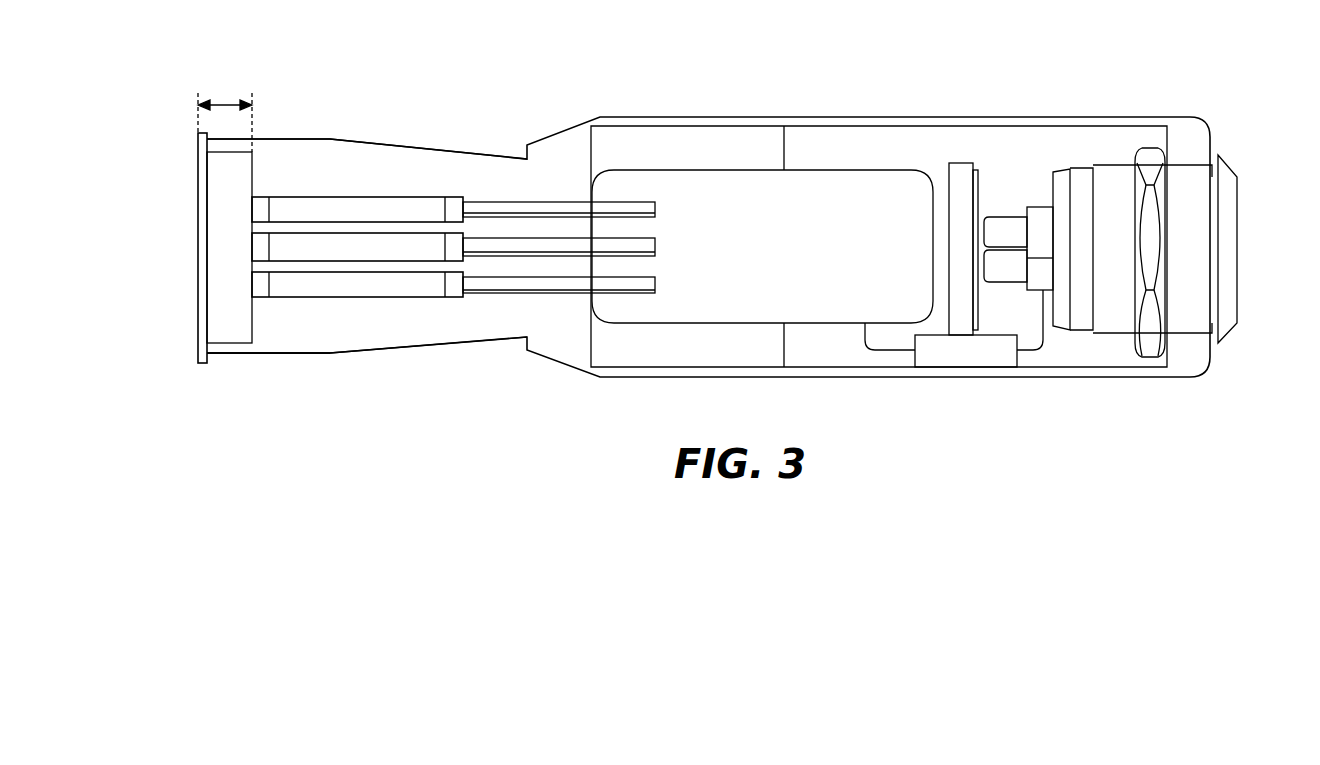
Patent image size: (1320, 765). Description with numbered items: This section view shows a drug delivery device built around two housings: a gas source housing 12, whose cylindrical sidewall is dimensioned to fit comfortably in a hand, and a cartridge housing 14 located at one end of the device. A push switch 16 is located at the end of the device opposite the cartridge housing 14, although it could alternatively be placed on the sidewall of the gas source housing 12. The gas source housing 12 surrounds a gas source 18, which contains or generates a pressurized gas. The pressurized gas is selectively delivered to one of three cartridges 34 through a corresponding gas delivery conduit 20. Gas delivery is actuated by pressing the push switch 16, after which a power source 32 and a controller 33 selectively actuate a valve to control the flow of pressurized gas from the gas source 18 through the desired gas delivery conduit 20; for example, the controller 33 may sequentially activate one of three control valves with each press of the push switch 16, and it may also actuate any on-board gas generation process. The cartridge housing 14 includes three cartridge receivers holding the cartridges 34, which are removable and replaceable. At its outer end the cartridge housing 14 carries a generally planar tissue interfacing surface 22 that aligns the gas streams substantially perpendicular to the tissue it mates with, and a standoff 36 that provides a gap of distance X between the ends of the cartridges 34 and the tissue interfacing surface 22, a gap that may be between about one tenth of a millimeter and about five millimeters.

The gas source housing 12 is at (918, 118).
The cartridge housing 14 is at (408, 149).
The push switch 16 is at (1240, 215).
The gas source 18 is at (814, 185).
The gas delivery conduit 20 is at (581, 208).
The tissue interfacing surface 22 is at (197, 178).
The power source 32 is at (976, 179).
The controller 33 is at (965, 368).
The cartridges 34 is at (252, 285).
The standoff 36 is at (232, 357).
The distance x X is at (223, 101).